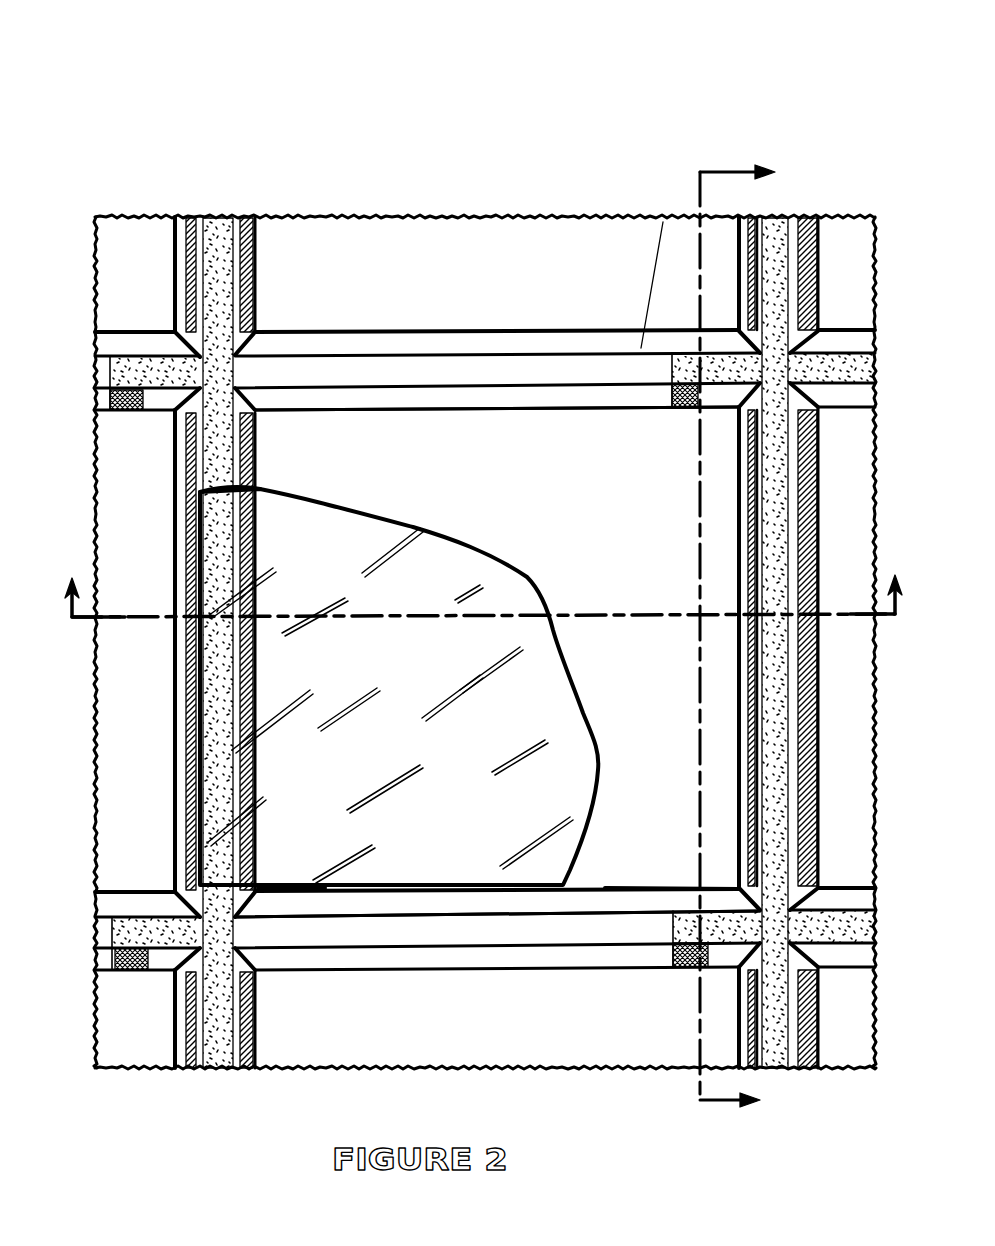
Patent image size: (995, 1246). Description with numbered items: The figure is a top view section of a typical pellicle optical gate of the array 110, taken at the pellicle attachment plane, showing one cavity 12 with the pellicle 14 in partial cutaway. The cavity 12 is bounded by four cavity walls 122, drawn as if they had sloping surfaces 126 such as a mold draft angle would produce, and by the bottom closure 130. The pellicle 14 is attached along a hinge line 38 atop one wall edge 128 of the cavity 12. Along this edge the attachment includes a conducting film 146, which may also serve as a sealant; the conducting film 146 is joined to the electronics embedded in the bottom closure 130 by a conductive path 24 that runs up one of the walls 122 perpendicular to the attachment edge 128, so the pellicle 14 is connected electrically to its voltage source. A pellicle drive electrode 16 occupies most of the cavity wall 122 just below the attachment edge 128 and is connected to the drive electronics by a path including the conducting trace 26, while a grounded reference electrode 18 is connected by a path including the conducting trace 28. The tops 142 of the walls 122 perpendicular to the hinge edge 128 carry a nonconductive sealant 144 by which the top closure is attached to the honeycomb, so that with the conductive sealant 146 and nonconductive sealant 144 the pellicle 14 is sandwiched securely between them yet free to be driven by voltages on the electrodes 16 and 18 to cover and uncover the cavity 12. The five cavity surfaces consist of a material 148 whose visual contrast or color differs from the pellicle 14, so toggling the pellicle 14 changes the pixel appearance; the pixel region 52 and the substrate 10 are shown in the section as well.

The substrate 10 is at (628, 545).
The cavity 12 is at (626, 686).
The pellicle 14 is at (447, 580).
The pellicle drive electrode 16 is at (255, 443).
The grounded reference electrode 18 is at (752, 800).
The conductive path 24 is at (137, 420).
The conducting trace 26 is at (303, 886).
The conducting trace 28 is at (661, 886).
The hinge line 38 is at (215, 520).
The pixel region 52 is at (147, 651).
The active matrix array 110 is at (240, 100).
The cavity walls 122 is at (490, 342).
The sloping surfaces 126 is at (458, 420).
The wall edge 128 is at (218, 222).
The bottom closure 130 is at (640, 257).
The tops of cavity walls 142 is at (543, 368).
The nonconductive sealant 144 is at (575, 368).
The conducting film 146 is at (203, 217).
The material 148 is at (662, 256).